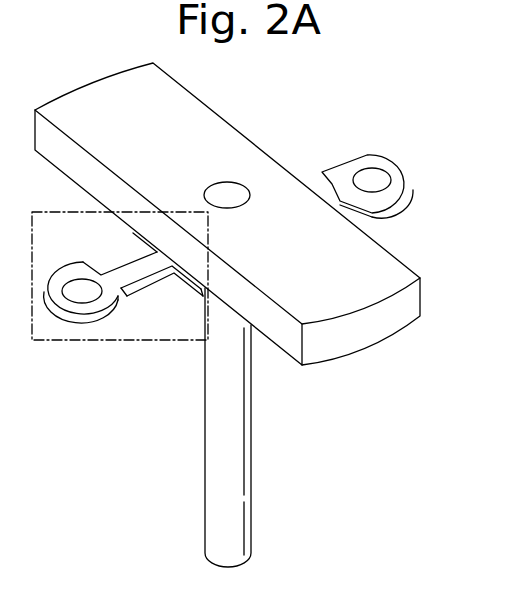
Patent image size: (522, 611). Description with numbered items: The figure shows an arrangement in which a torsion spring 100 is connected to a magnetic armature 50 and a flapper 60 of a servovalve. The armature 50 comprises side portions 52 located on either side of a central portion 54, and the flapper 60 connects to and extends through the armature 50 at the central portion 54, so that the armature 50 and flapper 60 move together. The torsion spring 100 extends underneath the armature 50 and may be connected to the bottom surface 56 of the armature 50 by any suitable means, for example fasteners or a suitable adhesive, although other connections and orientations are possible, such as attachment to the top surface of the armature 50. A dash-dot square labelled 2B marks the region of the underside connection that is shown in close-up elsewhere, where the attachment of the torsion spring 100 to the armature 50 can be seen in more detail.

The magnetic armature 50 is at (378, 328).
The side portions 52 is at (116, 90).
The central portion 54 is at (277, 174).
The bottom surface 56 is at (285, 355).
The flapper 60 is at (225, 494).
The torsion spring 100 is at (397, 170).
The square 2B is at (91, 343).